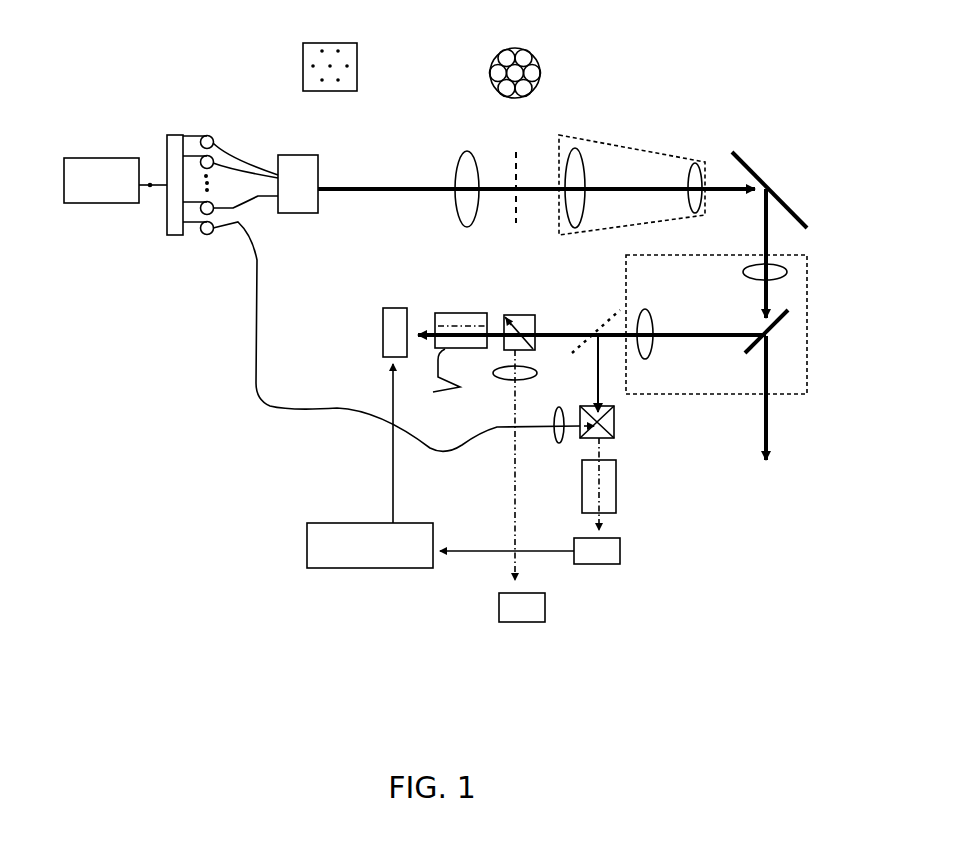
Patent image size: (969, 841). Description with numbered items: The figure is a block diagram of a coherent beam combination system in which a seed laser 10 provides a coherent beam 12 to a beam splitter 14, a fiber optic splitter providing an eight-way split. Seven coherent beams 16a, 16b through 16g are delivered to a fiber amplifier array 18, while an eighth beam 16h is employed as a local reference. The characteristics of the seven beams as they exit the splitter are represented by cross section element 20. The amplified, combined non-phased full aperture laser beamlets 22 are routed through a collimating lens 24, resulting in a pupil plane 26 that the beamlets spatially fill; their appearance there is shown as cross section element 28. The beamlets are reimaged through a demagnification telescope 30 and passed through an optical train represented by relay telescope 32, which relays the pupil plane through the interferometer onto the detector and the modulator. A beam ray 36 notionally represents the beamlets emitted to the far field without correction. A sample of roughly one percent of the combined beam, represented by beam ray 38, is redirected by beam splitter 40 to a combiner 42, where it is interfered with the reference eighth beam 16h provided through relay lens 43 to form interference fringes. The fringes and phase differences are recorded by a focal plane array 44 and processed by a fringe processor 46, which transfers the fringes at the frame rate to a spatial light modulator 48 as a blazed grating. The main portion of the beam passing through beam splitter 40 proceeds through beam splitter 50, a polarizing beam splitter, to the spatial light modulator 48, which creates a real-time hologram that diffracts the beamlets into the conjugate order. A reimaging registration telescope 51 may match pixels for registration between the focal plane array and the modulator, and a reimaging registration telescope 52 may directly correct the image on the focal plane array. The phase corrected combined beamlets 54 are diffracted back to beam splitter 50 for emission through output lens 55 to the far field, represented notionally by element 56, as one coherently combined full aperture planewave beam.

The seed laser 10 is at (78, 158).
The coherent beam 12 is at (150, 183).
The beam splitter 14 is at (176, 135).
The coherent beam 16a is at (228, 148).
The coherent beam 16b is at (237, 162).
The coherent beam 16g is at (232, 208).
The eighth beam 16h is at (255, 321).
The fiber amplifier array 18 is at (298, 155).
The cross section element 20 is at (301, 62).
The combined non-phased full aperture laser beamlets 22 is at (350, 187).
The collimating lens 24 is at (457, 177).
The pupil plane 26 is at (520, 164).
The cross section element 28 is at (518, 48).
The demagnification telescope 30 is at (612, 232).
The relay telescope 32 is at (808, 332).
The beam ray 36 is at (769, 418).
The beam ray 38 is at (597, 381).
The beam splitter 40 is at (612, 311).
The combiner 42 is at (614, 418).
The relay lens 43 is at (560, 407).
The focal plane array 44 is at (620, 545).
The fringe processor 46 is at (307, 547).
The spatial light modulator 48 is at (388, 308).
The beam splitter 50 is at (505, 349).
The reimaging registration telescope 51 is at (434, 376).
The reimaging registration telescope 52 is at (616, 493).
The phase corrected combined beamlets 54 is at (432, 315).
The output lens 55 is at (503, 382).
The far field 56 is at (499, 598).